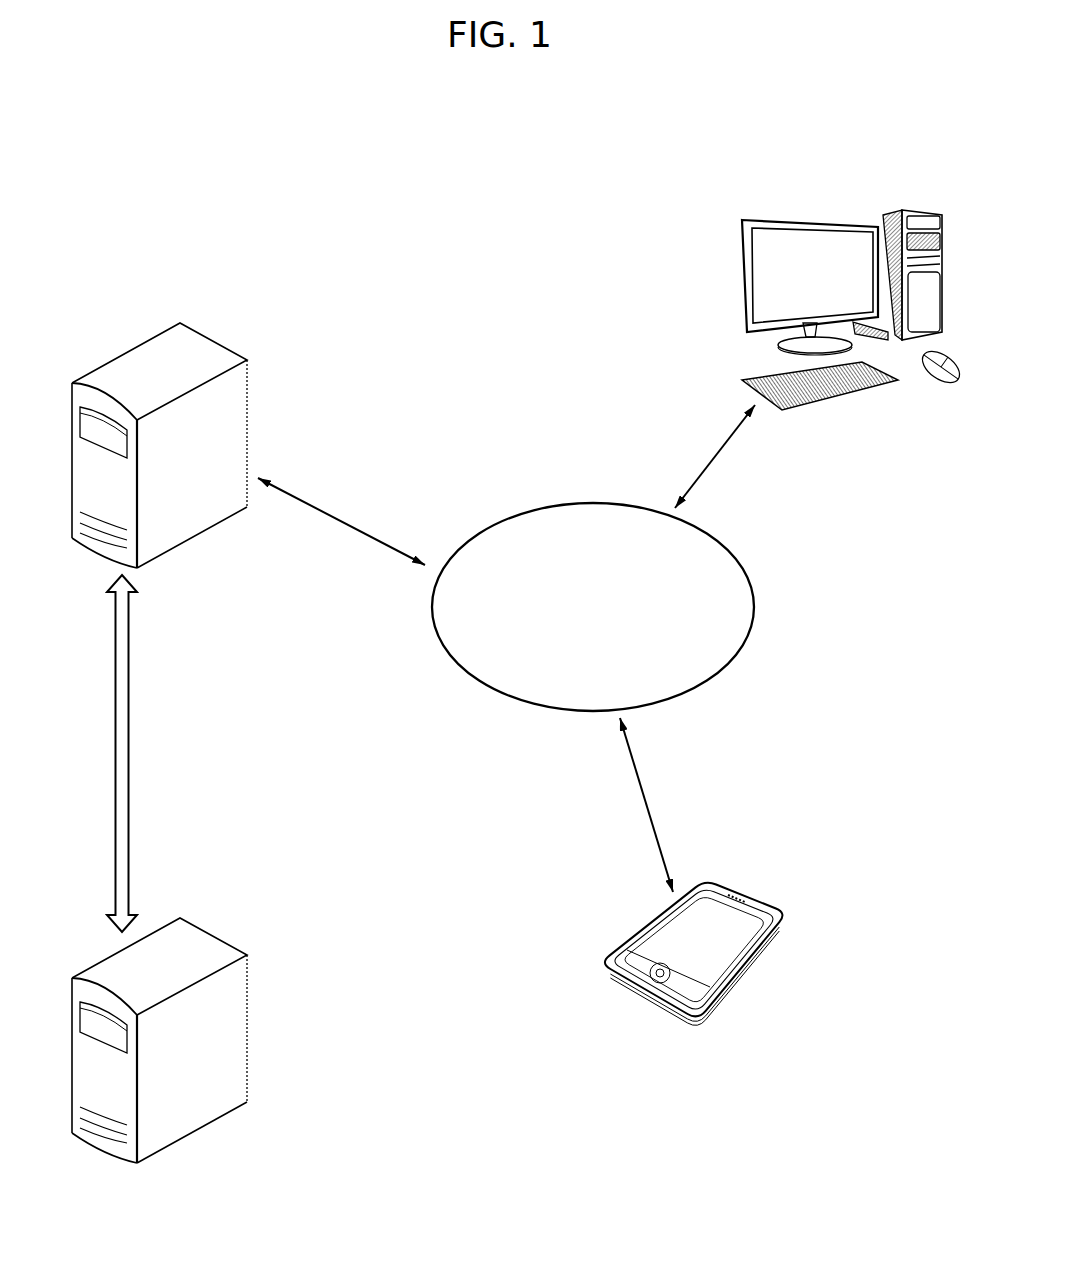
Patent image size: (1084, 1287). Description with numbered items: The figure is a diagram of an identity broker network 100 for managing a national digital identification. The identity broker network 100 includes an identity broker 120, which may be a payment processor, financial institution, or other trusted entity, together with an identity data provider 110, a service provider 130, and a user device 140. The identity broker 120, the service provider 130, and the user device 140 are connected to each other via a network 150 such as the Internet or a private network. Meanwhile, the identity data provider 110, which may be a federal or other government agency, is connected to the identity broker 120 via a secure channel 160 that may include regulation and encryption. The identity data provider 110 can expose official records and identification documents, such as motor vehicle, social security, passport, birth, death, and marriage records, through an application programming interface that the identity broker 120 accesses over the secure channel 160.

The identity broker network 100 is at (80, 136).
The identity data provider 110 is at (230, 1005).
The identity broker 120 is at (230, 408).
The service provider 130 is at (883, 220).
The user device 140 is at (763, 903).
The network 150 is at (603, 640).
The secure channel 160 is at (130, 713).